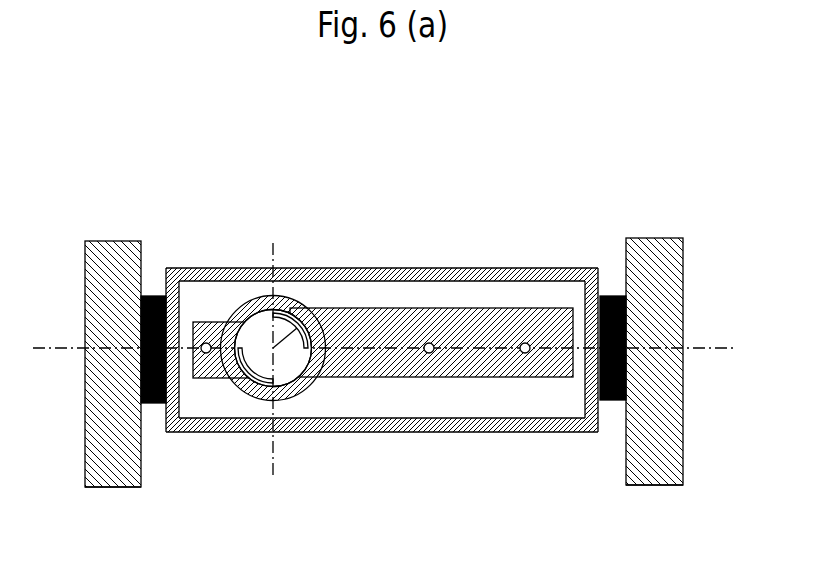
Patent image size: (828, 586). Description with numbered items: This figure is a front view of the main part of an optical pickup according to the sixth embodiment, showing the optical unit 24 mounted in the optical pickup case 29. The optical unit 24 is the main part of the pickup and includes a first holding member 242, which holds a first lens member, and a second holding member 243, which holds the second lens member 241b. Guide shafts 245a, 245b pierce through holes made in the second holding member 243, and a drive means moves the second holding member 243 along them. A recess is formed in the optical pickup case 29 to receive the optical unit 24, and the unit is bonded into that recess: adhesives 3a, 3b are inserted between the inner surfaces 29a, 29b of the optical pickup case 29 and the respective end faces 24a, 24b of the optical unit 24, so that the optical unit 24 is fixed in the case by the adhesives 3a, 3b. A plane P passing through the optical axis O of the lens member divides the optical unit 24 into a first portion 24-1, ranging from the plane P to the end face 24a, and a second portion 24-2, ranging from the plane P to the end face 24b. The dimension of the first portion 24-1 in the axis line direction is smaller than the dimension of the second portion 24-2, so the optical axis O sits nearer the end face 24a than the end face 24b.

The optical unit 24 is at (598, 155).
The end face of the optical unit 24a is at (160, 421).
The end face of the optical unit 24b is at (601, 419).
The first portion 24-1 is at (233, 433).
The second portion 24-2 is at (461, 433).
The second lens member 241b is at (342, 318).
The first holding member 242 is at (562, 268).
The second holding member 243 is at (510, 309).
The guide shaft 245a is at (206, 343).
The guide shaft 245b is at (430, 343).
The optical pickup case 29 is at (108, 242).
The inner surface of the optical pickup case 29a is at (143, 487).
The inner surface of the optical pickup case 29b is at (627, 480).
The adhesive 3a is at (152, 296).
The adhesive 3b is at (607, 296).
The plane p-p P is at (271, 357).
The optical axis O is at (306, 306).